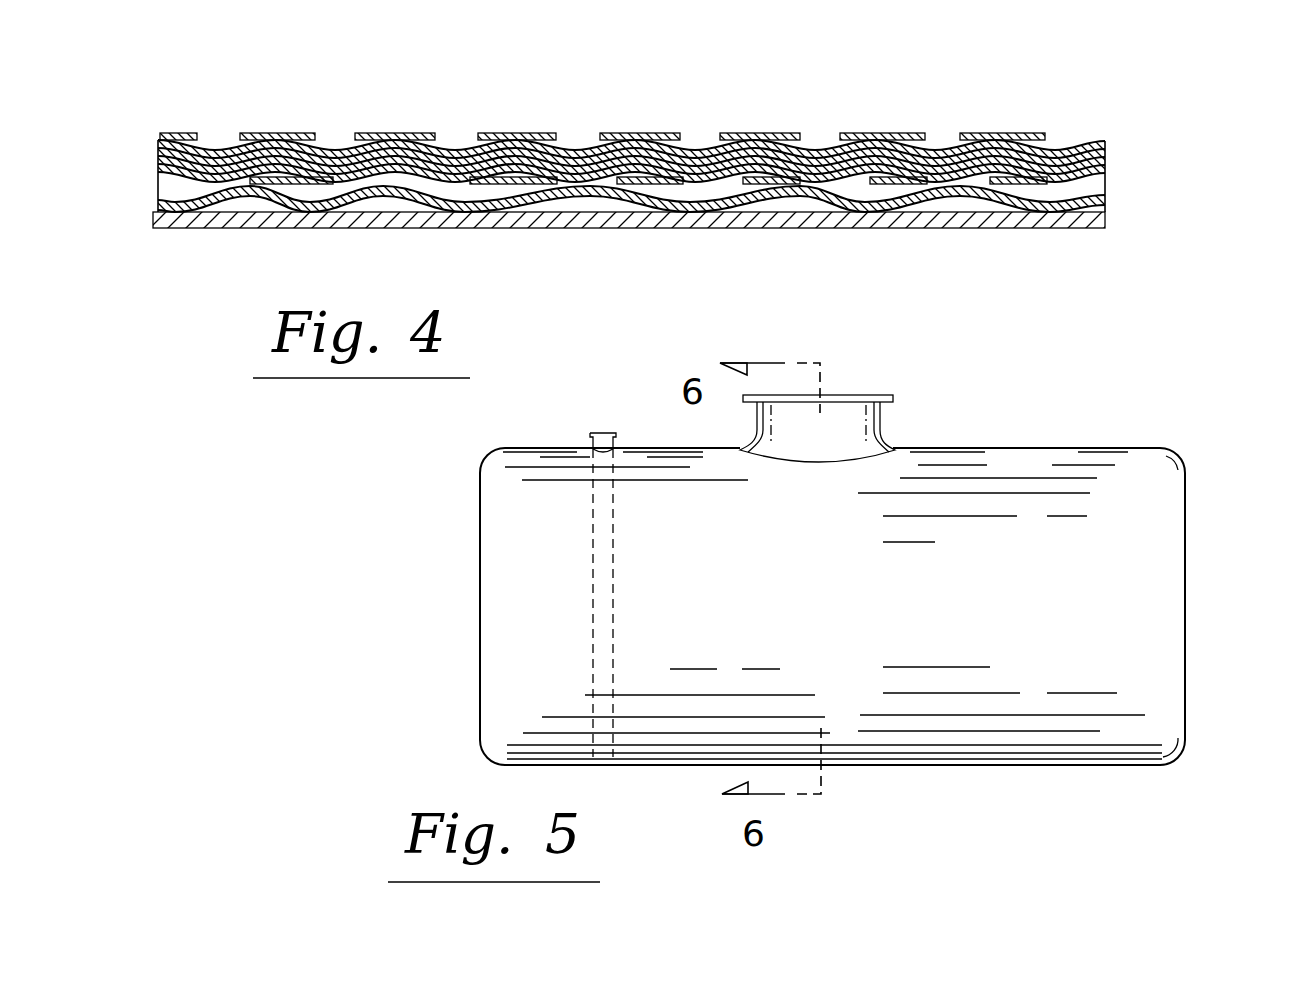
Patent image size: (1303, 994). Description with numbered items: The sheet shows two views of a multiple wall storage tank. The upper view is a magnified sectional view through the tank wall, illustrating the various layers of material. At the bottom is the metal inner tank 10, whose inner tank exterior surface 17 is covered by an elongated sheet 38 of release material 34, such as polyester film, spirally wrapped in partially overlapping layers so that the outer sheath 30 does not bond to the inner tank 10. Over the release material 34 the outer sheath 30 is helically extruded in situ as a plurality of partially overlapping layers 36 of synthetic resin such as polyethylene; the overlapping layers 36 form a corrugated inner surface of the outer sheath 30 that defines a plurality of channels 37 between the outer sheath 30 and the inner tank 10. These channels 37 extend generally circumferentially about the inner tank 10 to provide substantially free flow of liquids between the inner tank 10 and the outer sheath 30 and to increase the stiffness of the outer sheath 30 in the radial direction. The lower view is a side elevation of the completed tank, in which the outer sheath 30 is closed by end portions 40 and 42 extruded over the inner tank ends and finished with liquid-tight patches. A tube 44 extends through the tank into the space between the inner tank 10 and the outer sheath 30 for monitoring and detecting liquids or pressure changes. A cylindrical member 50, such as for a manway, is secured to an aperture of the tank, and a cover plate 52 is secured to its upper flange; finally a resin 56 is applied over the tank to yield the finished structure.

In FIG. 4, the inner tank 10 is at (1072, 226).
In FIG. 4, the inner tank exterior surface 17 is at (465, 138).
In FIG. 4, the outer sheath 30 is at (256, 125).
In FIG. 4, the release material 34 is at (520, 214).
In FIG. 4, the partially overlapping layers 36 is at (333, 136).
In FIG. 4, the channels 37 is at (244, 205).
In FIG. 4, the elongated sheet of release material 38 is at (1110, 196).
In FIG. 5, the end portion of outer sheath 40 is at (480, 583).
In FIG. 5, the end portion of outer sheath 42 is at (1185, 563).
In FIG. 5, the tube 44 is at (606, 587).
In FIG. 5, the cylindrical member 50 is at (888, 422).
In FIG. 5, the cover plate 52 is at (850, 396).
In FIG. 5, the resin 56 is at (1015, 450).